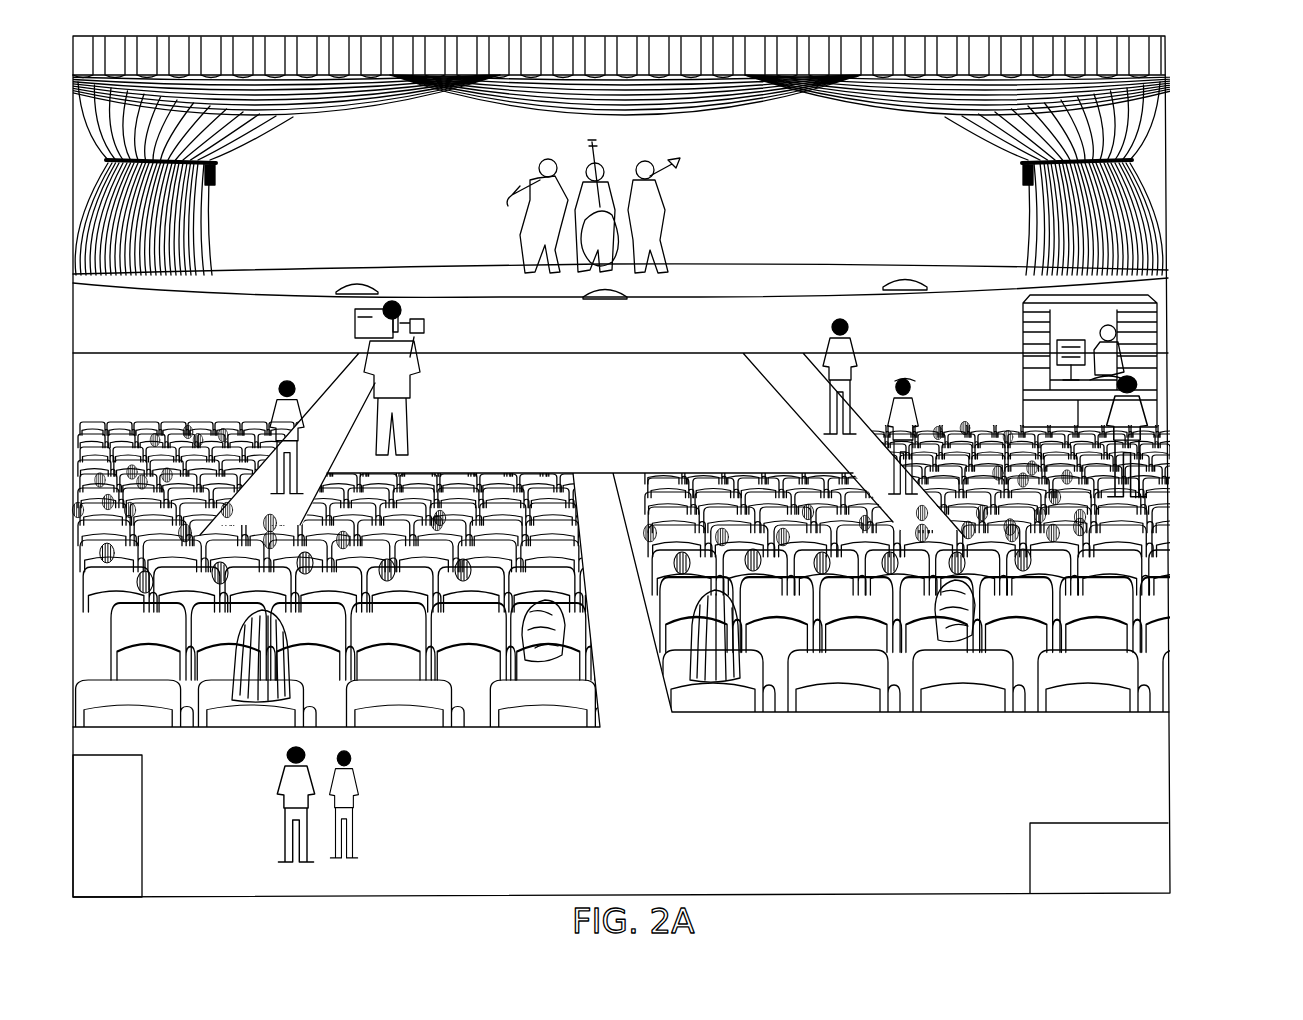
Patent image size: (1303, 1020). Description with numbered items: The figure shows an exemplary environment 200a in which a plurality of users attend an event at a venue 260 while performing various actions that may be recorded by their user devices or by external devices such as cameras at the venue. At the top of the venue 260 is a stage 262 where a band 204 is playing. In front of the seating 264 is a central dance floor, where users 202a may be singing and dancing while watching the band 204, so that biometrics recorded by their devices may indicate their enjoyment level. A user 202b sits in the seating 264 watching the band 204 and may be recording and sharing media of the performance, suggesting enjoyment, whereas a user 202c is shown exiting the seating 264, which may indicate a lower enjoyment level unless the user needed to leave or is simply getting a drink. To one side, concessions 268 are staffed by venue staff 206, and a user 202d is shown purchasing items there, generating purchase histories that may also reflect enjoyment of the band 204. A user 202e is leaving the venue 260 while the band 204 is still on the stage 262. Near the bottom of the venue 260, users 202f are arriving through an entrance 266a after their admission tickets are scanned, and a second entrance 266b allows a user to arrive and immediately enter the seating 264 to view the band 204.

The environment 200a is at (1183, 84).
The band 204 is at (663, 208).
The stage 262 is at (380, 232).
The concessions 268 is at (1157, 322).
The venue staff 206 is at (1120, 368).
The user 202d is at (1143, 448).
The users 202a is at (282, 388).
The user 202c is at (963, 426).
The user 202b is at (806, 508).
The seating 264 is at (740, 533).
The user 202e is at (440, 512).
The users 202f is at (286, 760).
The entrance 266a is at (143, 806).
The entrance 266b is at (1097, 824).
The venue 260 is at (707, 874).